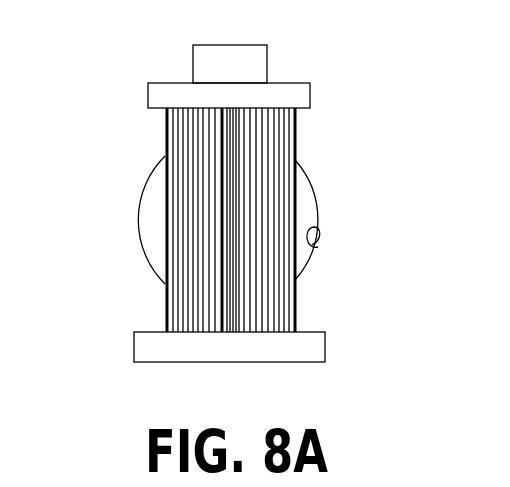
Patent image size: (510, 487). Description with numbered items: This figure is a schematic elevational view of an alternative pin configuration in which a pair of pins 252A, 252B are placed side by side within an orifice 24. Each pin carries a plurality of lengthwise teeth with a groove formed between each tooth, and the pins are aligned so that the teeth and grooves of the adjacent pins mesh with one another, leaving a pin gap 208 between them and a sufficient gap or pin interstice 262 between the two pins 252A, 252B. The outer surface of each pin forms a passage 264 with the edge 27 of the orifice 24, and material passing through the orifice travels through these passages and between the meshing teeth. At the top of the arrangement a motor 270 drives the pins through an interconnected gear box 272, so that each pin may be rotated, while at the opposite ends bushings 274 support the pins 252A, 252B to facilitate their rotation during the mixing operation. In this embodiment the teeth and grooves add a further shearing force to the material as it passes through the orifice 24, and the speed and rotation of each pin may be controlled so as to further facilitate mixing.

The motor 270 is at (267, 63).
The gear box 272 is at (310, 95).
The bushings 274 is at (323, 332).
The pin 252A is at (163, 154).
The pin 252B is at (297, 158).
The pin gap 208 is at (235, 245).
The pin interstice 262 is at (208, 334).
The passage 264 is at (314, 212).
The edge 27 is at (318, 247).
The orifice 24 is at (157, 242).